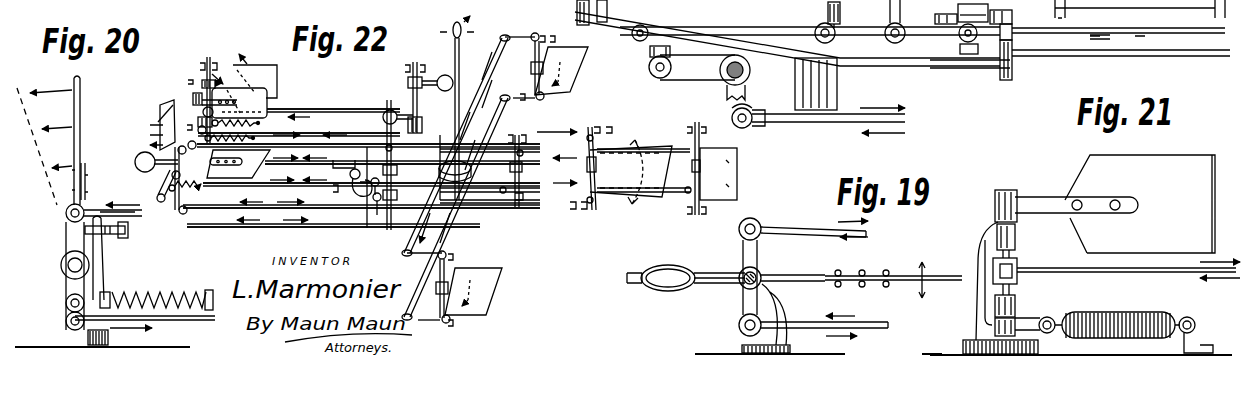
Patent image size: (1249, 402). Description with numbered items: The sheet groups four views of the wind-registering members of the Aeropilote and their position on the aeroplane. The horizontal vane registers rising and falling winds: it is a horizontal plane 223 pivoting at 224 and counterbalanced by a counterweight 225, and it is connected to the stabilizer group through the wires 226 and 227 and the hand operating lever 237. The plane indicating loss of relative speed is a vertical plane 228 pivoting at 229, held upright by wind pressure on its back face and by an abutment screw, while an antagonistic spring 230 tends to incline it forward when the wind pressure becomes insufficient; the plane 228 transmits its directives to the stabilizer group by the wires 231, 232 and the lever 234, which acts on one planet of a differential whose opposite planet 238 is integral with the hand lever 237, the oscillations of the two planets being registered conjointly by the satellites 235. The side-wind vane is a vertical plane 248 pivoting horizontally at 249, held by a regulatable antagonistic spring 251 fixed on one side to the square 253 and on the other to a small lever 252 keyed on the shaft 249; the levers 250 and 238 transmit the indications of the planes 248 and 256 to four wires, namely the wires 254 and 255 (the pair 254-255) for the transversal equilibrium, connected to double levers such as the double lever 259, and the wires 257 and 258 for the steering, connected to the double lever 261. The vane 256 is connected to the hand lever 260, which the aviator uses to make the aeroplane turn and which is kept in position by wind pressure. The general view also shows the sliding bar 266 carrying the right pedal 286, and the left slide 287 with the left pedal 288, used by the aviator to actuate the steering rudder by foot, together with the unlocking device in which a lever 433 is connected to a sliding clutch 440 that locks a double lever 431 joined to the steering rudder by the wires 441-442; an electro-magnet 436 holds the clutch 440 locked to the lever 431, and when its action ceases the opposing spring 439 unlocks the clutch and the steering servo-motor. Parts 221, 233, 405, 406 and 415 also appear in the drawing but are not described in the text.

In FIG. 19, the bar 221 is at (807, 322).
In FIG. 22, the horizontal plane 223 is at (212, 178).
In FIG. 19, the horizontal plane 223 is at (885, 286).
In FIG. 19, the pivot 224 is at (742, 277).
In FIG. 19, the counterweight 225 is at (684, 288).
In FIG. 22, the wire 226 is at (261, 164).
In FIG. 19, the wire 226 is at (826, 238).
In FIG. 22, the wire 227 is at (226, 198).
In FIG. 20, the vertical plane 228 is at (80, 116).
In FIG. 22, the vertical plane 228 is at (159, 122).
In FIG. 20, the pivot 229 is at (63, 272).
In FIG. 20, the antagonistic spring 230 is at (160, 314).
In FIG. 20, the wire 231 is at (92, 206).
In FIG. 22, the wire 231 is at (272, 188).
In FIG. 20, the wire 232 is at (208, 290).
In FIG. 22, the wire 232 is at (280, 215).
In FIG. 20, the adjusting screw 233 is at (122, 233).
In FIG. 22, the lever 234 is at (398, 165).
In FIG. 22, the satellites 235 is at (962, 68).
In FIG. 22, the hand operating lever 237 is at (294, 117).
In FIG. 22, the planet 238 is at (198, 140).
In FIG. 22, the vertical plane 248 is at (258, 98).
In FIG. 21, the vertical plane 248 is at (1097, 176).
In FIG. 21, the shaft 249 is at (996, 212).
In FIG. 21, the lever 250 is at (992, 262).
In FIG. 21, the regulatable antagonistic spring 251 is at (1093, 313).
In FIG. 21, the small lever 252 is at (1030, 322).
In FIG. 21, the square 253 is at (1205, 345).
In FIG. 22, the wire 254 is at (312, 135).
In FIG. 21, the wires 254-255 is at (1040, 257).
In FIG. 22, the wire 255 is at (364, 185).
In FIG. 22, the vane 256 is at (256, 66).
In FIG. 22, the wire 257 is at (292, 112).
In FIG. 22, the wire 258 is at (340, 134).
In FIG. 22, the double lever 259 is at (439, 172).
In FIG. 22, the hand lever 260 is at (452, 38).
In FIG. 22, the double lever 261 is at (571, 12).
In FIG. 22, the sliding bar 266 is at (430, 150).
In FIG. 22, the right pedal 286 is at (377, 205).
In FIG. 22, the left slide 287 is at (533, 203).
In FIG. 22, the left pedal 288 is at (368, 195).
In FIG. 22, the roller carriage 405 is at (690, 76).
In FIG. 22, the roller 406 is at (750, 102).
In FIG. 22, the rod 415 is at (1110, 36).
In FIG. 22, the double lever 431 is at (1012, 42).
In FIG. 22, the lever 433 is at (744, 30).
In FIG. 22, the electro-magnet 436 is at (838, 92).
In FIG. 22, the opposing spring 439 is at (808, 14).
In FIG. 22, the sliding clutch 440 is at (1002, 20).
In FIG. 22, the wires 441-442 is at (1183, 46).